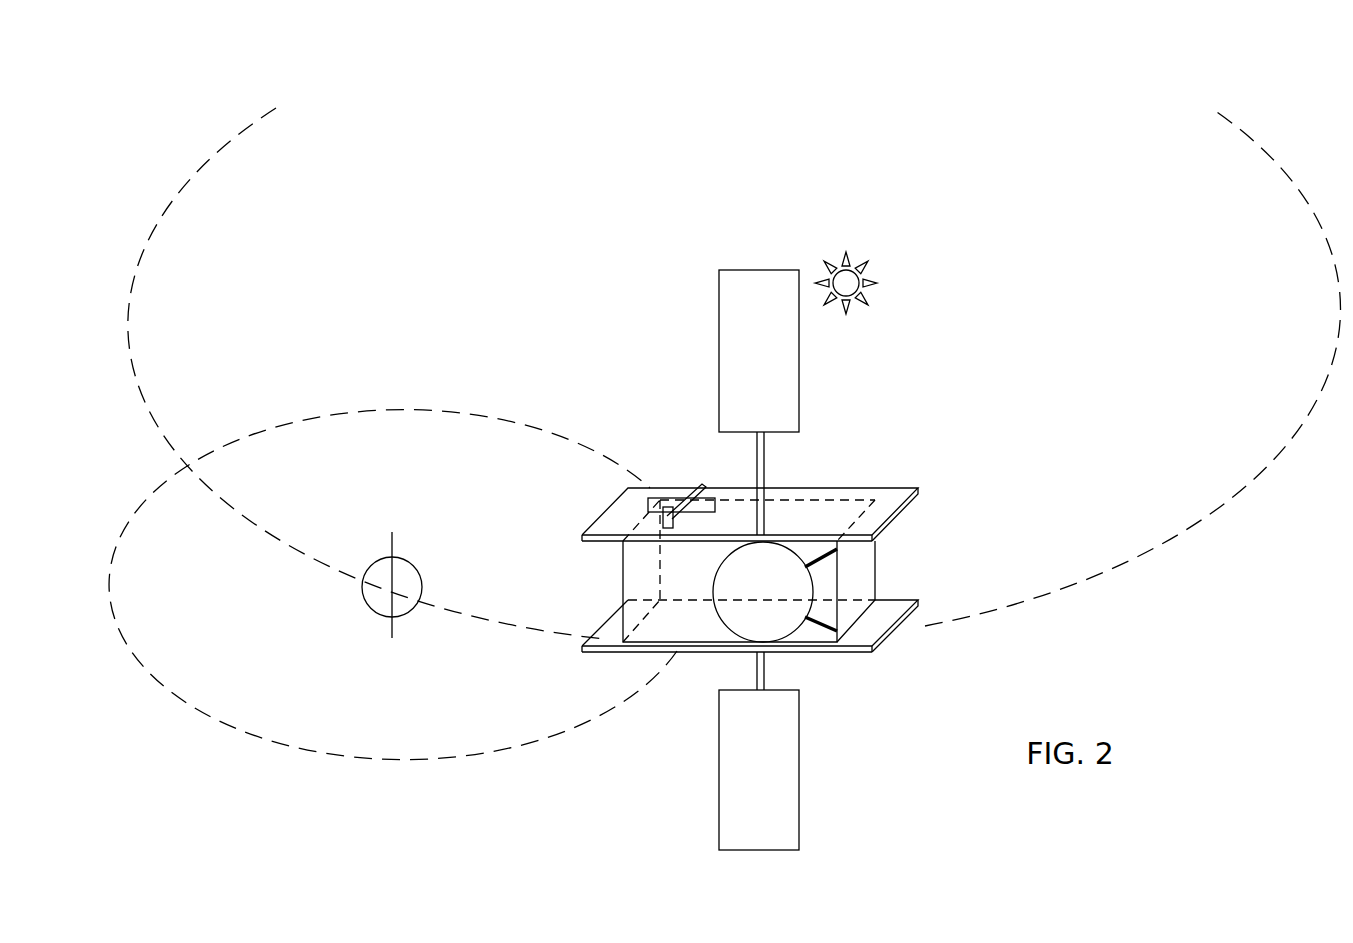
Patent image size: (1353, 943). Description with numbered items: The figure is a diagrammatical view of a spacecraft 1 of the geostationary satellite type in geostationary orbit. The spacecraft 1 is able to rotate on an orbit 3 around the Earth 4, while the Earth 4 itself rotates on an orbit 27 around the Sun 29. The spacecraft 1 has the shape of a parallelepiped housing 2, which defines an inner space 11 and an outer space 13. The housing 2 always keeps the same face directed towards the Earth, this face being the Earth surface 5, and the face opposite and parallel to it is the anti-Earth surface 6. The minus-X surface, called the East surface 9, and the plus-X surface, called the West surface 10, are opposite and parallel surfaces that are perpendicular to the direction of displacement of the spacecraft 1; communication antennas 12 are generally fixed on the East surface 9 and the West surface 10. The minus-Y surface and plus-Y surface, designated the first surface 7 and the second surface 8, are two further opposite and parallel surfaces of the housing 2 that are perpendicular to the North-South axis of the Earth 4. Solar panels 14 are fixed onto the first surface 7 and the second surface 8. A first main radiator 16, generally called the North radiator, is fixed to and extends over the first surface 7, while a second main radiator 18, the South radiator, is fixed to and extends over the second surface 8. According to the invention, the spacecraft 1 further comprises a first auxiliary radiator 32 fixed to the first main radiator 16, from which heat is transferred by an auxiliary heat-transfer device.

The spacecraft 1 is at (880, 464).
The parallelepiped housing 2 is at (760, 479).
The orbit 3 is at (415, 408).
The Earth 4 is at (416, 567).
The Earth surface 5 is at (645, 572).
The anti-Earth surface 6 is at (858, 583).
The first surface (North surface, −Y) 7 is at (819, 499).
The second surface (South surface, +Y) 8 is at (750, 671).
The East surface (−X surface) 9 is at (889, 547).
The West surface (+X surface) 10 is at (658, 620).
The inner space 11 is at (758, 600).
The communication antennas 12 is at (763, 592).
The outer space 13 is at (758, 545).
The solar panels 14 is at (800, 368).
The first main radiator 16 is at (896, 497).
The second main radiator 18 is at (862, 657).
The orbit 27 is at (1135, 561).
The Sun 29 is at (862, 271).
The first auxiliary radiator 32 is at (690, 498).